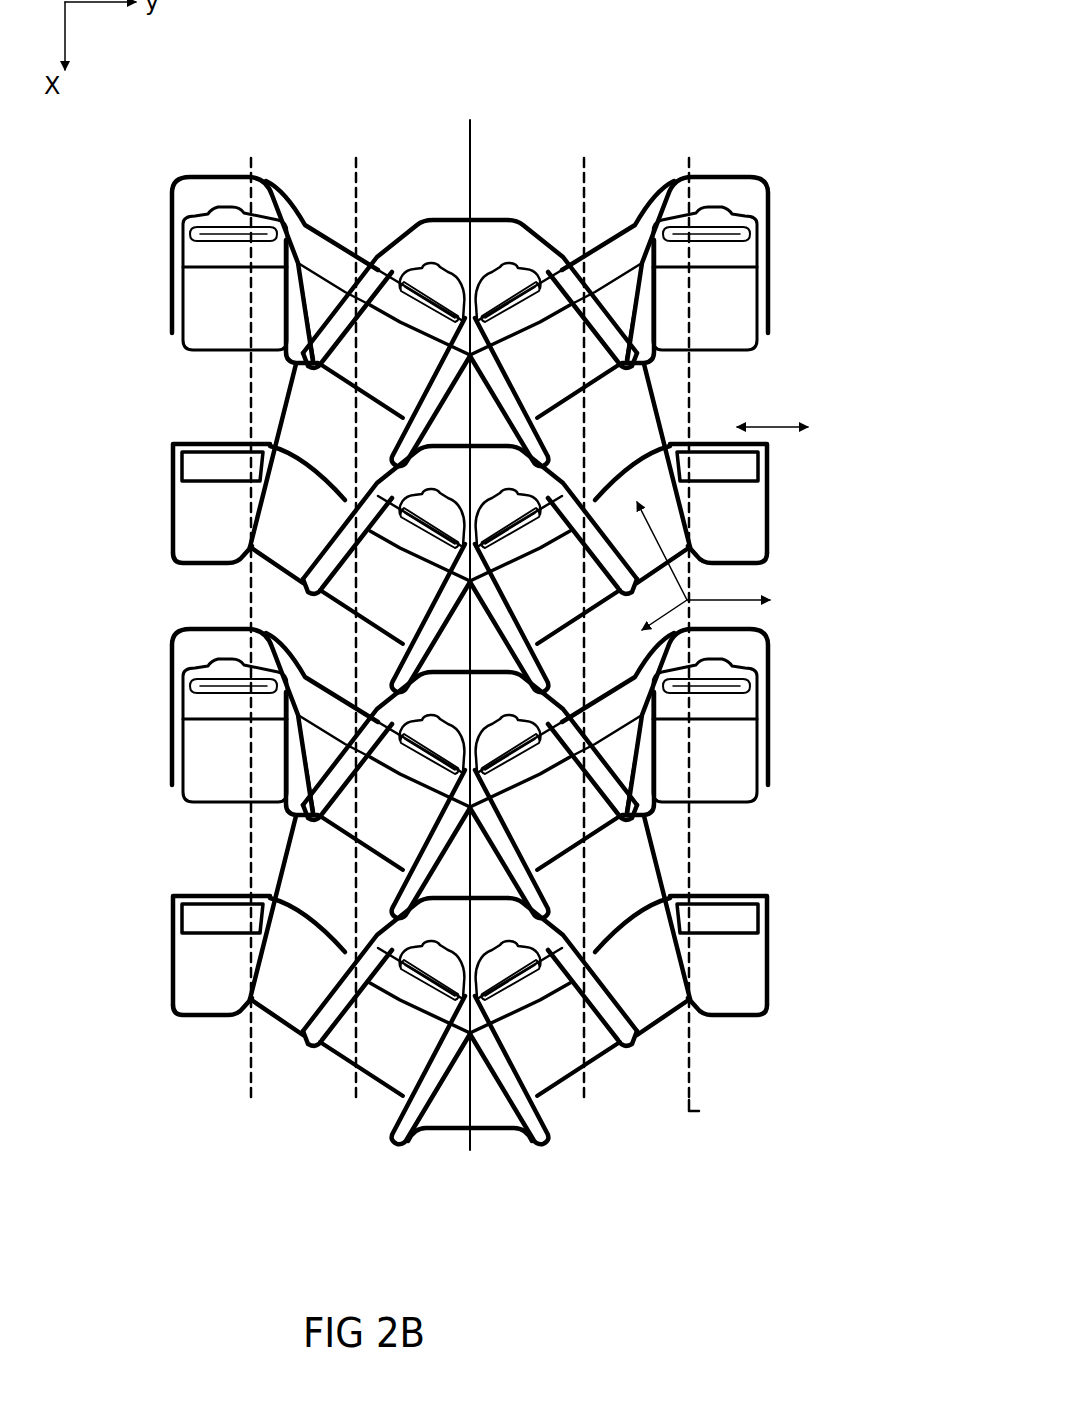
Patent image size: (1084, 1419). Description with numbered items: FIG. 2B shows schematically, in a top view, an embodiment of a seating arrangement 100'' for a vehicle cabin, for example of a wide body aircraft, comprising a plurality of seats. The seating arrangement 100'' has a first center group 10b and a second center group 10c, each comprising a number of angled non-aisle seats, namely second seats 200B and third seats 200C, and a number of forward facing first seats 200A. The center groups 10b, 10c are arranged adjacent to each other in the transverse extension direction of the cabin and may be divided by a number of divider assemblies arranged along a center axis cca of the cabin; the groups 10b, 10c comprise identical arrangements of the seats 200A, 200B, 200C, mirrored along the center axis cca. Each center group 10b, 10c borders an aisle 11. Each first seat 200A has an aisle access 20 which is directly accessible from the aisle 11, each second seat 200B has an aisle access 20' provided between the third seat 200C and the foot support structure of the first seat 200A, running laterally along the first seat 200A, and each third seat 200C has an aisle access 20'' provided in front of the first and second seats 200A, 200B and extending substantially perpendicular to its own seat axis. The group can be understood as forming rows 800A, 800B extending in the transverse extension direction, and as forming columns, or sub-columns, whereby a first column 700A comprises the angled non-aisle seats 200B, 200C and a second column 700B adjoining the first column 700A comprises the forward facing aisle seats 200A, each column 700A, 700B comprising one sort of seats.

The first center group 10b is at (316, 126).
The second center group 10c is at (569, 126).
The center axis cca is at (468, 122).
The seating arrangement 100'' is at (630, 601).
The first seat 200A is at (741, 201).
The second seat 200B is at (434, 254).
The third seat 200C is at (562, 473).
The row 800A is at (805, 508).
The row 800B is at (805, 271).
The aisle access 20 is at (772, 412).
The aisle access 20' is at (741, 551).
The aisle access 20'' is at (752, 637).
The aisle 11 is at (122, 546).
The first column 700A is at (377, 1158).
The second column 700B is at (226, 1158).